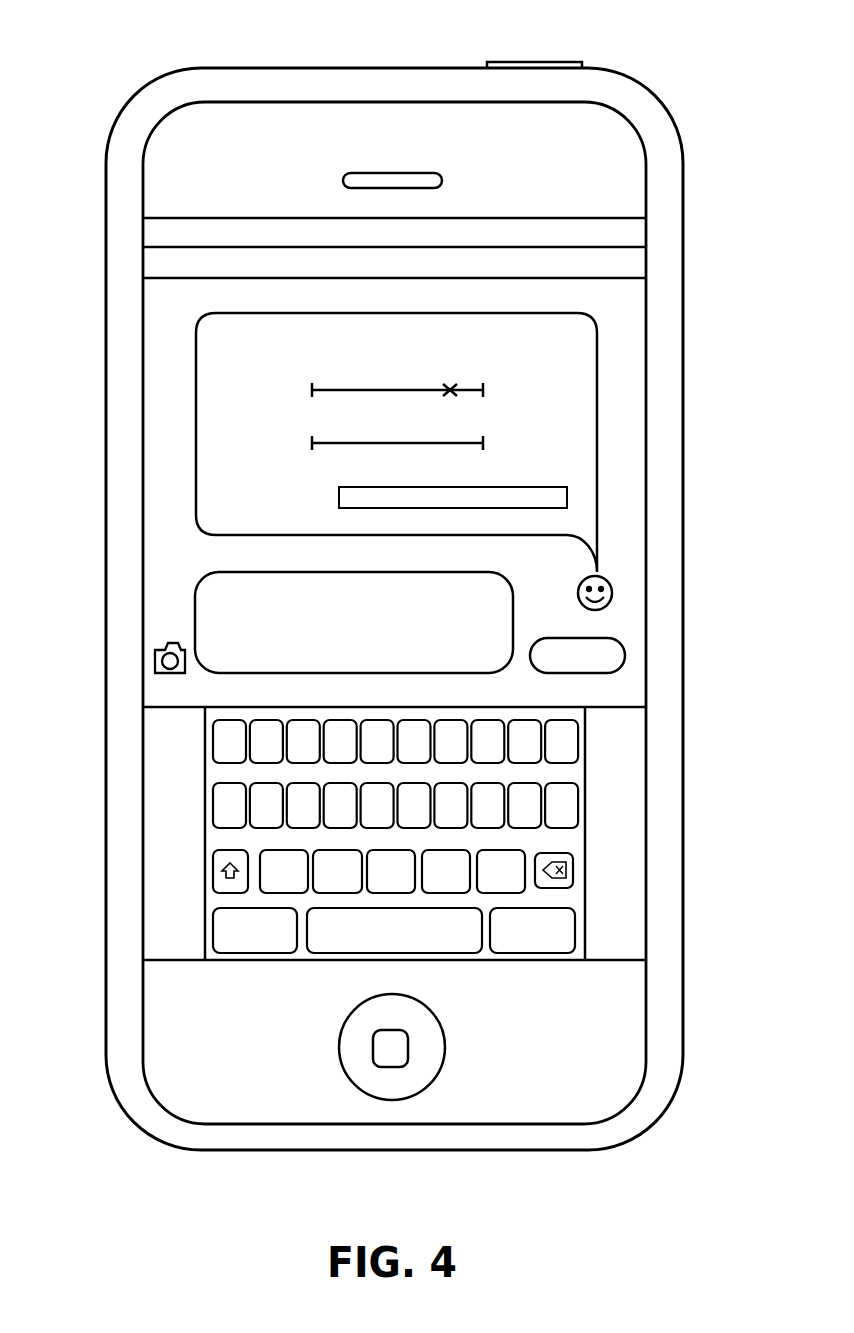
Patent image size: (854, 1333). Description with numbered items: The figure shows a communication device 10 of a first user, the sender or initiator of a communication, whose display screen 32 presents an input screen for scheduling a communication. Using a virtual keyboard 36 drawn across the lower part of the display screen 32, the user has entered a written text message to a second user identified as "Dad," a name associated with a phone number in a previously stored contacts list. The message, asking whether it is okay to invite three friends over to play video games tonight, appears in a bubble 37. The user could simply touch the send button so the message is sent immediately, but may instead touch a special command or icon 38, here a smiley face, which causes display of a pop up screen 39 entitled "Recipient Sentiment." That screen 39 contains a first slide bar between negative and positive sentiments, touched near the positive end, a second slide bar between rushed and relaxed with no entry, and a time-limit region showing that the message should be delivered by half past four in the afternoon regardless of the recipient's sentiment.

The communication device 10 is at (272, 67).
The display screen 32 is at (556, 218).
The virtual keyboard 36 is at (585, 847).
The bubble 37 is at (195, 620).
The icon 38 is at (612, 593).
The pop up screen 39 is at (597, 422).